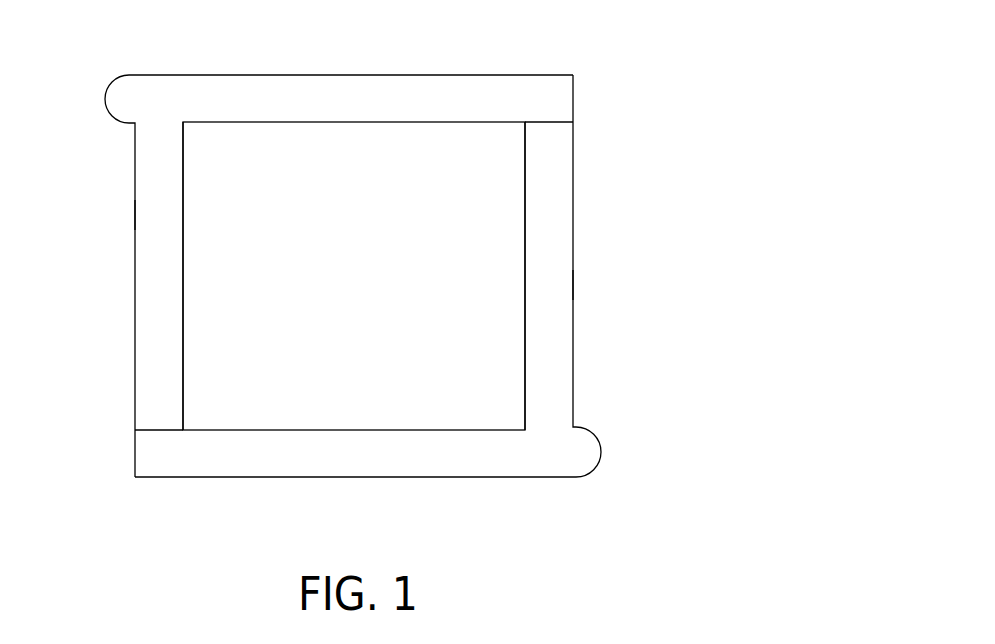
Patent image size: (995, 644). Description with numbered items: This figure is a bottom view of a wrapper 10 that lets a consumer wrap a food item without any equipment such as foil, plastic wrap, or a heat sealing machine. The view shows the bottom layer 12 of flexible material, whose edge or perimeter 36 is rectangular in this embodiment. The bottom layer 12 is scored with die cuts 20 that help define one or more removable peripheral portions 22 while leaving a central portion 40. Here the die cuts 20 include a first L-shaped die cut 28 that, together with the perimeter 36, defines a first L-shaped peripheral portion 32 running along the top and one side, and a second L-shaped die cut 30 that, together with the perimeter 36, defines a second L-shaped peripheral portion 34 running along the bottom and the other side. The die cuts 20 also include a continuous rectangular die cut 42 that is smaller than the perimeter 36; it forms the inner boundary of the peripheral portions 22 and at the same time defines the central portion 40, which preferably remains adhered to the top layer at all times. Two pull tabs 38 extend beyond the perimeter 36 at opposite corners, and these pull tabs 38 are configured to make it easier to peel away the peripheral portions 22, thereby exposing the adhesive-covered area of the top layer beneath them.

The wrapper 10 is at (348, 299).
The bottom layer 12 is at (348, 271).
The die cuts 20 is at (182, 353).
The peripheral portions 22 is at (165, 214).
The first L-shaped die cut 28 is at (353, 122).
The second L-shaped die cut 30 is at (266, 430).
The first L-shaped peripheral portion 32 is at (257, 92).
The second L-shaped peripheral portion 34 is at (557, 388).
The perimeter 36 is at (573, 171).
The pull tabs 38 is at (128, 102).
The central portion 40 is at (354, 276).
The continuous rectangular die cut 42 is at (182, 276).